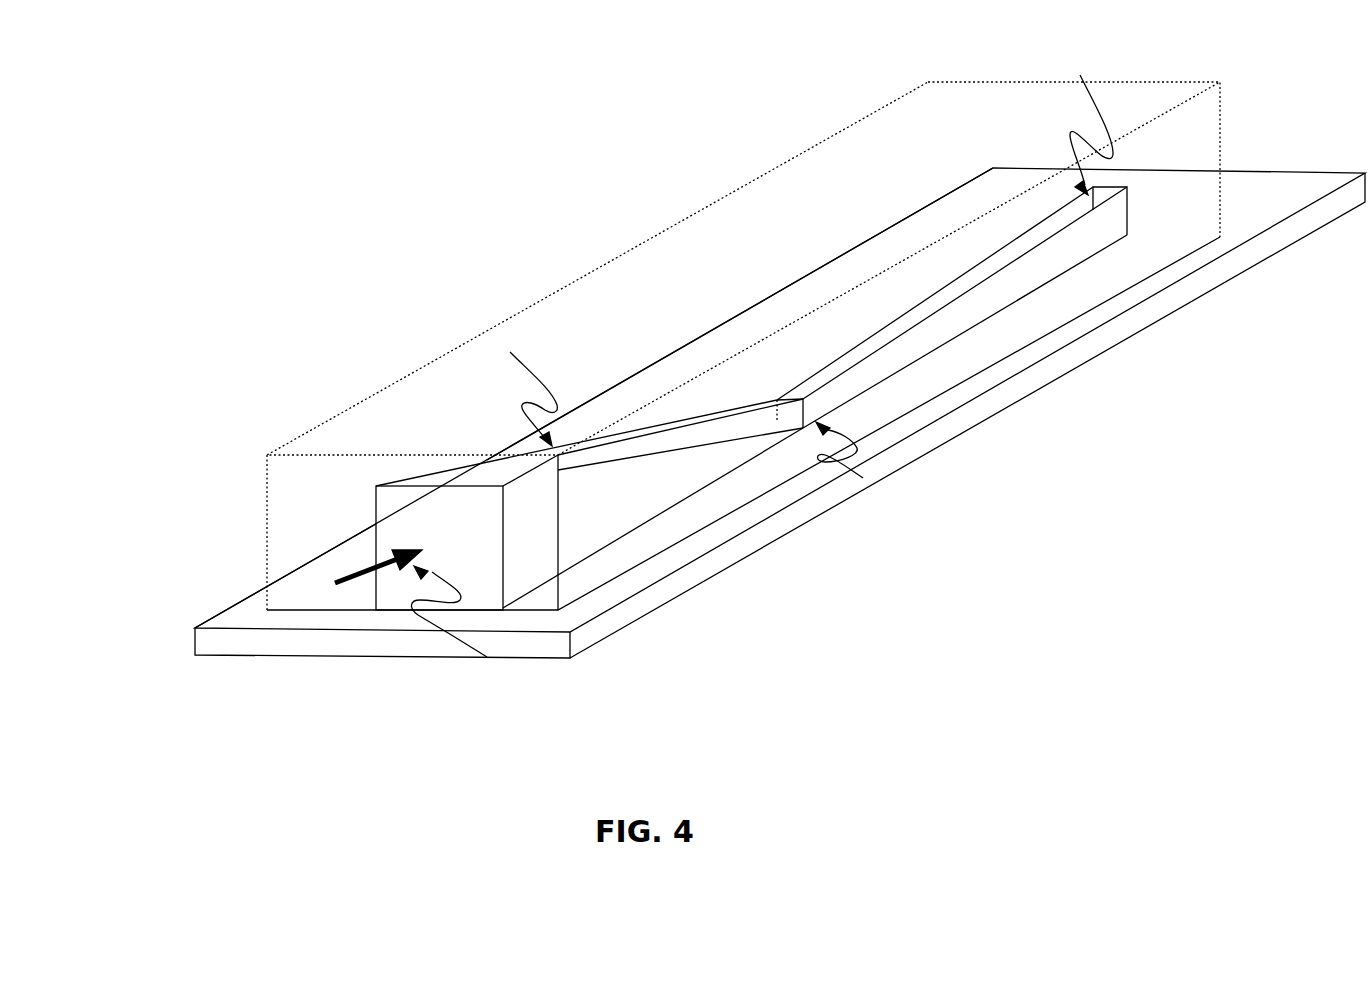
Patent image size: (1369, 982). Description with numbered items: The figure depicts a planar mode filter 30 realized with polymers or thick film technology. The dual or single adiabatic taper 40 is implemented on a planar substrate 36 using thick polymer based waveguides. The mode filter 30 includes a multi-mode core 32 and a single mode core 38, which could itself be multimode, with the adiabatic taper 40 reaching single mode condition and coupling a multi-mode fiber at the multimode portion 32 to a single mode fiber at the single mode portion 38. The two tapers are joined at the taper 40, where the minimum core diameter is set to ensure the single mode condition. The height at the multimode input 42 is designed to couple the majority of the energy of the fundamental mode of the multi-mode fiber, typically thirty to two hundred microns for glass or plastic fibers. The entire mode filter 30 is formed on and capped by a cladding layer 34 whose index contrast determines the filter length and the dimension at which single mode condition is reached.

The mode filter 30 is at (228, 238).
The multi-mode core 32 is at (628, 526).
The cladding layer 34 is at (733, 508).
The planar substrate 36 is at (1110, 352).
The single mode core 38 is at (955, 278).
The adiabatic taper 40 is at (785, 385).
The multimode input 42 is at (362, 582).